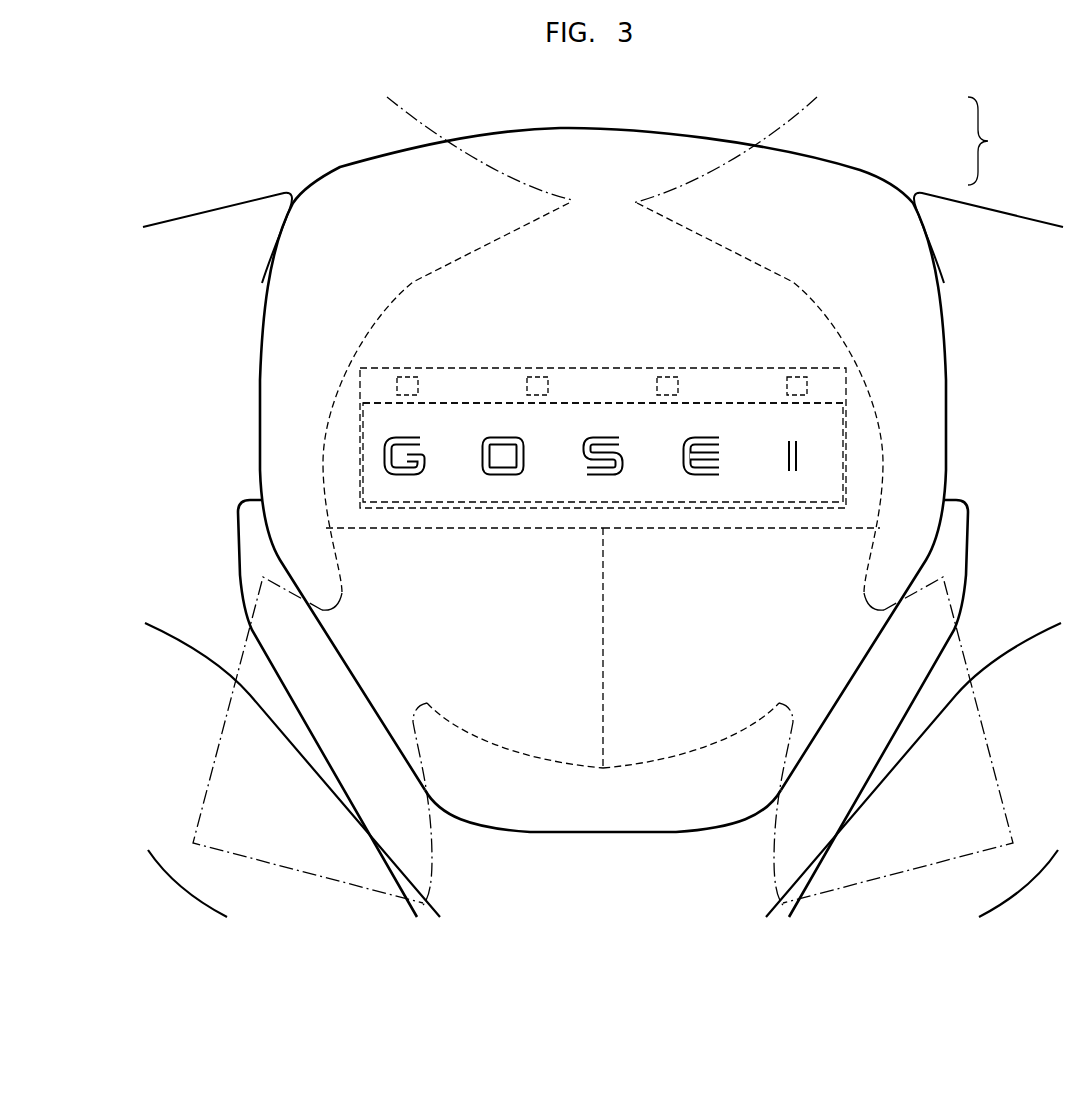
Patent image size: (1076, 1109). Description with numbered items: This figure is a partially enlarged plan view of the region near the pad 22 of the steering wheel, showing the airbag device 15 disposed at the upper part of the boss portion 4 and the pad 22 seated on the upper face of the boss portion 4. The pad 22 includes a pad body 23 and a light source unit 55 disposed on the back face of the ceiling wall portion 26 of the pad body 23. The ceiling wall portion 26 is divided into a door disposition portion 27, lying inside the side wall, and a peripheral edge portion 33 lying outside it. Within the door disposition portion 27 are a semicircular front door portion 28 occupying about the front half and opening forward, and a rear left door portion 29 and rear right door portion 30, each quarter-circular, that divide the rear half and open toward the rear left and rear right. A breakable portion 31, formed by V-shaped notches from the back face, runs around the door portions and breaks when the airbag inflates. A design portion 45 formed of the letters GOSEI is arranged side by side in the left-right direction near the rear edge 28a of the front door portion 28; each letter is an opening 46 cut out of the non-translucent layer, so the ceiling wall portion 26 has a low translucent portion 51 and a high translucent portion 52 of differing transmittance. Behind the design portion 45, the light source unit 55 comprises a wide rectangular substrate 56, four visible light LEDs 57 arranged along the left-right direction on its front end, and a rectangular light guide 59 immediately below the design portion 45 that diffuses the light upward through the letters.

The boss portion 4 is at (605, 520).
The airbag device 15 is at (988, 259).
The pad 22 is at (790, 238).
The pad body 23 is at (891, 176).
The ceiling wall portion 26 is at (931, 368).
The door disposition portion 27 is at (372, 276).
The front door portion 28 is at (745, 300).
The rear edge 28a is at (663, 533).
The rear left door portion 29 is at (513, 723).
The rear right door portion 30 is at (692, 723).
The breakable portion 31 is at (430, 272).
The peripheral edge portion 33 is at (277, 367).
The design portion 45 is at (709, 458).
The opening 46 is at (617, 458).
The low translucent portion 51 is at (903, 468).
The high translucent portion 52 is at (715, 481).
The light source unit 55 is at (833, 356).
The substrate 56 is at (458, 383).
The visible light LED 57 is at (408, 375).
The light guide 59 is at (368, 477).